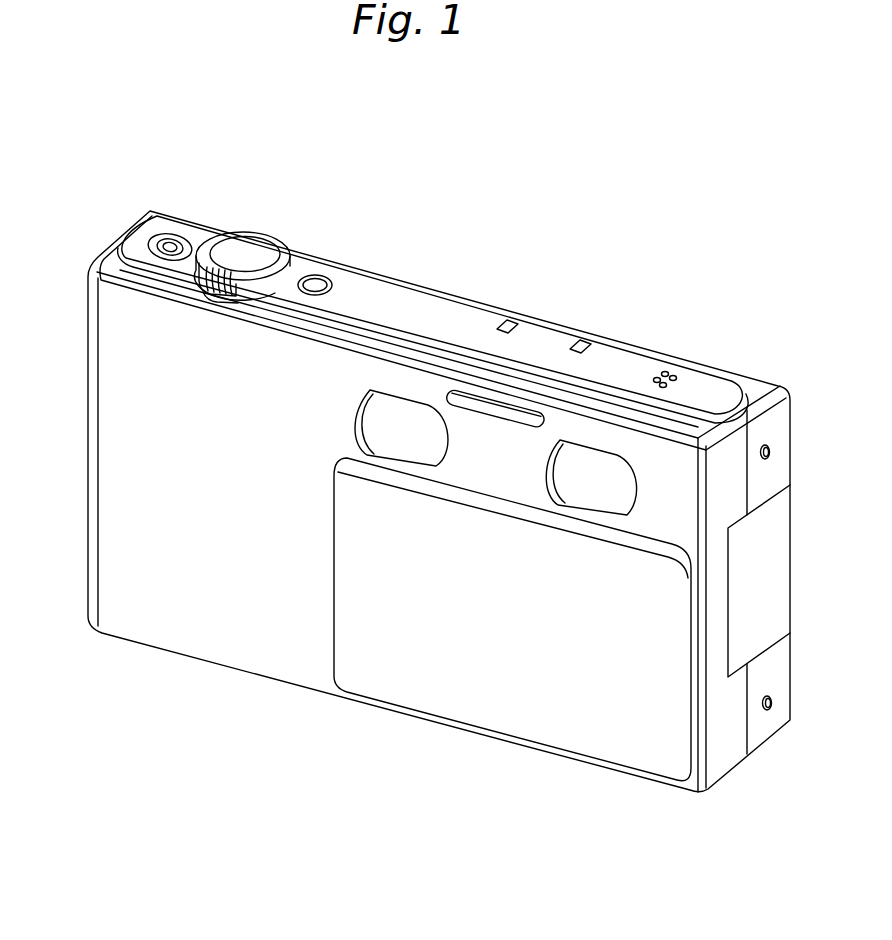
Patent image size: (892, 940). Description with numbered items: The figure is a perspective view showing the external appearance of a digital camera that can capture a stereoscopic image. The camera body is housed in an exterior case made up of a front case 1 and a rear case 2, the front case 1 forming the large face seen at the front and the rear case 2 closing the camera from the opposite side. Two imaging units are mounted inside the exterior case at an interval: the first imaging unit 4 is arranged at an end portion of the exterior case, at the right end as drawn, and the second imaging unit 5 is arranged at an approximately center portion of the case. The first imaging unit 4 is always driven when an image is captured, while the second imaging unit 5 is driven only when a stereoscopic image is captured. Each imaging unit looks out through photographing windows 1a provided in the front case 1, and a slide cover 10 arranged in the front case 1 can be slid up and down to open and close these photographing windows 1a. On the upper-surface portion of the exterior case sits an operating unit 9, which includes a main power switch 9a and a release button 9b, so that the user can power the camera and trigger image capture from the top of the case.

The front case 1 is at (86, 328).
The photographing windows 1a is at (577, 447).
The rear case 2 is at (752, 390).
The first imaging unit 4 is at (590, 465).
The second imaging unit 5 is at (383, 408).
The operating unit 9 is at (378, 273).
The main power switch 9a is at (318, 277).
The release button 9b is at (252, 248).
The slide cover 10 is at (407, 688).